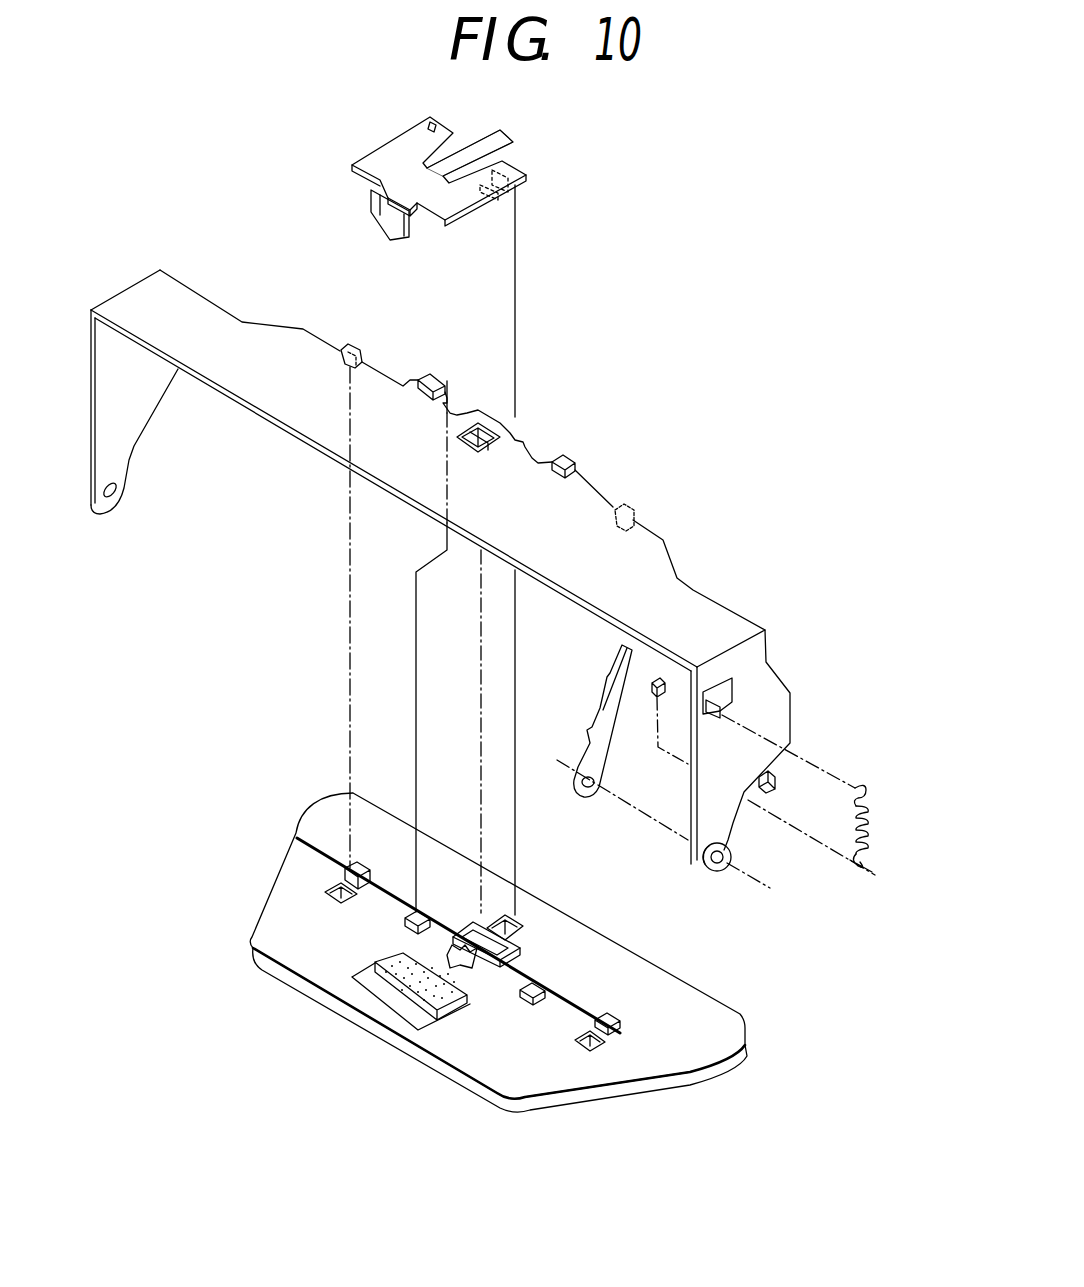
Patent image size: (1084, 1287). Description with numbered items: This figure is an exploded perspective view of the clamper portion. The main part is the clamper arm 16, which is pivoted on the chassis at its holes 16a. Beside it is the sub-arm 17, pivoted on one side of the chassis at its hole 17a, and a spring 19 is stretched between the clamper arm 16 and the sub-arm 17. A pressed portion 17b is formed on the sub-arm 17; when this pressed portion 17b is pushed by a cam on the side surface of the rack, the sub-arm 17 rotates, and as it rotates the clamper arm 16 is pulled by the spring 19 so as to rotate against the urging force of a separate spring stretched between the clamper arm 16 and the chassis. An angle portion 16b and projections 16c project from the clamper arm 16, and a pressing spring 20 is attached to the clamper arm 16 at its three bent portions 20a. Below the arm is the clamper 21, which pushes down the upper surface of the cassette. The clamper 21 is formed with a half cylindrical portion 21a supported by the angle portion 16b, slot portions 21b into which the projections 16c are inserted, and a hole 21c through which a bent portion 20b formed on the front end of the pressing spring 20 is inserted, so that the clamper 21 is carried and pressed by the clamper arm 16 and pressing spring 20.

The clamper arm 16 is at (465, 602).
The holes 16a is at (713, 863).
The angle portion 16b is at (490, 430).
The projections 16c is at (357, 350).
The sub-arm 17 is at (606, 737).
The hole 17a is at (587, 786).
The pressed portion 17b is at (612, 665).
The spring 19 is at (873, 833).
The pressing spring 20 is at (490, 201).
The bent portions 20a is at (387, 225).
The bent portion 20b is at (520, 145).
The clamper 21 is at (464, 973).
The half cylindrical portion 21a is at (492, 957).
The slot portions 21b is at (323, 897).
The hole 21c is at (520, 930).